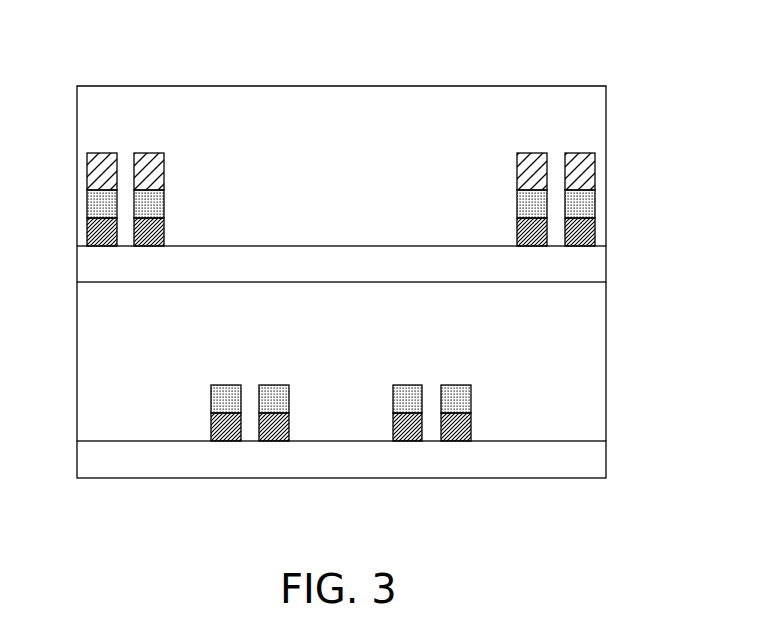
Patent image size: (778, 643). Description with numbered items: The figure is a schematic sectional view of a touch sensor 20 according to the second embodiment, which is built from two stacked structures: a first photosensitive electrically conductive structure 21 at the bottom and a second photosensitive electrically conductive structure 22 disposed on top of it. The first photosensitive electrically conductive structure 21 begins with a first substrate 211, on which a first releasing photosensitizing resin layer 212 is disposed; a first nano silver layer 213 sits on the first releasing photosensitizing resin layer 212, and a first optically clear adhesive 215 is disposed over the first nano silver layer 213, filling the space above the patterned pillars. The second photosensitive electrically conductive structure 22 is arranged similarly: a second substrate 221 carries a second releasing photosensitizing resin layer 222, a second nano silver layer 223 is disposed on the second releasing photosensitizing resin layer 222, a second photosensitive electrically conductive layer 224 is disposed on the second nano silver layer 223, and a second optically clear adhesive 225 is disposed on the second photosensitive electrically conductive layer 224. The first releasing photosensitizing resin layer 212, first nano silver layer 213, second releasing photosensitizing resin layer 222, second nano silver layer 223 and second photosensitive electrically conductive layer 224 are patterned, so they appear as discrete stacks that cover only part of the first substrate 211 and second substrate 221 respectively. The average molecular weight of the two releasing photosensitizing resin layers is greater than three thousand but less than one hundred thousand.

The touch sensor 20 is at (60, 42).
The first photosensitive electrically conductive structure 21 is at (683, 313).
The first substrate 211 is at (590, 462).
The first releasing photosensitizing resin layer 212 is at (462, 427).
The first nano silver layer 213 is at (463, 397).
The first optically clear adhesive 215 is at (565, 332).
The second photosensitive electrically conductive structure 22 is at (683, 85).
The second substrate 221 is at (588, 265).
The second releasing photosensitizing resin layer 222 is at (597, 227).
The second nano silver layer 223 is at (588, 192).
The second photosensitive electrically conductive layer 224 is at (583, 173).
The second optically clear adhesive 225 is at (578, 112).